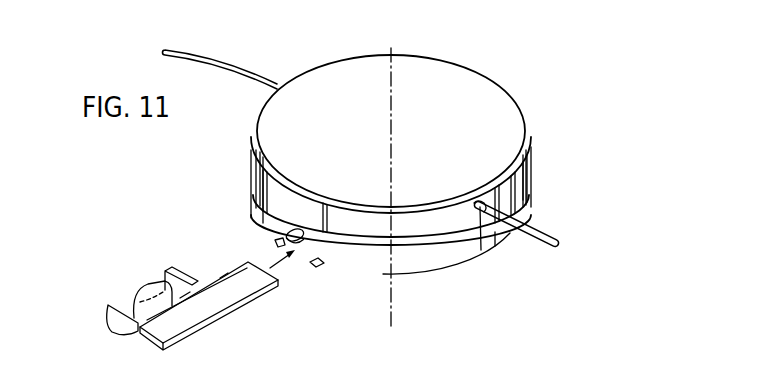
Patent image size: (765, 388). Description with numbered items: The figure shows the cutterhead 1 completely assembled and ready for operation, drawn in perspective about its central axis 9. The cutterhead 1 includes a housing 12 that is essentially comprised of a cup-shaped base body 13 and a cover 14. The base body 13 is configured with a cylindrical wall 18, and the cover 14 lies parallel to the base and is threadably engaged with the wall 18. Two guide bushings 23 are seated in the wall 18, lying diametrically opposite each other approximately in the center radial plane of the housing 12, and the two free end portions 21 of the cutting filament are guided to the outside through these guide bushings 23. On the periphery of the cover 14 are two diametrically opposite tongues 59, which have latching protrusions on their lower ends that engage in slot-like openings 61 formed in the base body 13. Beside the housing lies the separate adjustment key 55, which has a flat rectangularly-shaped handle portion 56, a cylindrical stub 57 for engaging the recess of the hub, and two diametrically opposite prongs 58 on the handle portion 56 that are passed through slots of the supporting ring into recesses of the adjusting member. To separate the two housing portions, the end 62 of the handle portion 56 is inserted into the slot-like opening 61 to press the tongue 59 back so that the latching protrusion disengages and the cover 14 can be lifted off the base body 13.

The cutterhead 1 is at (382, 171).
The central axis 9 is at (403, 193).
The housing 12 is at (397, 186).
The base body 13 is at (503, 237).
The cover 14 is at (508, 115).
The cylindrical wall 18 is at (522, 209).
The free end portions 21 is at (203, 58).
The guide bushings 23 is at (481, 250).
The adjustment key 55 is at (184, 291).
The handle portion 56 is at (259, 294).
The cylindrical stub 57 is at (143, 288).
The prongs 58 is at (177, 267).
The tongues 59 is at (260, 185).
The slot-like opening 61 is at (300, 258).
The end of handle portion 62 is at (252, 273).